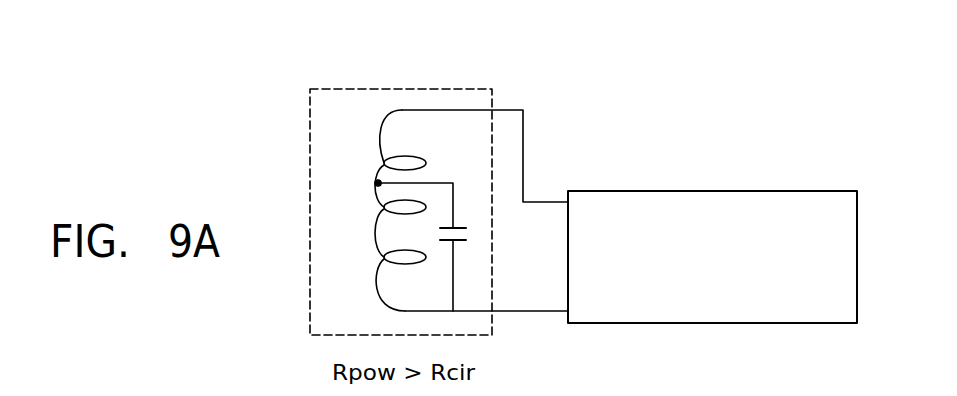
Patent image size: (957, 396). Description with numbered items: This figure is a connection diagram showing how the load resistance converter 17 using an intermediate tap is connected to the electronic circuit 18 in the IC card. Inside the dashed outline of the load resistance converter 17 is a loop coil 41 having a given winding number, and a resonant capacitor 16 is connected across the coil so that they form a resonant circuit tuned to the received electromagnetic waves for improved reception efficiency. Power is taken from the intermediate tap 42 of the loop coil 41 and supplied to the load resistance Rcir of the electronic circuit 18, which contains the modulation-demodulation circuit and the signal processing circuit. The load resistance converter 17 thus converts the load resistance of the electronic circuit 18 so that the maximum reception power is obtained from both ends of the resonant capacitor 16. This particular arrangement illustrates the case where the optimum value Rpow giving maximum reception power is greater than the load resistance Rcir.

The load resistance converter 17 is at (388, 89).
The loop coil 41 is at (375, 232).
The intermediate tap 42 is at (374, 182).
The resonant capacitor 16 is at (458, 225).
The electronic circuit 18 is at (617, 191).